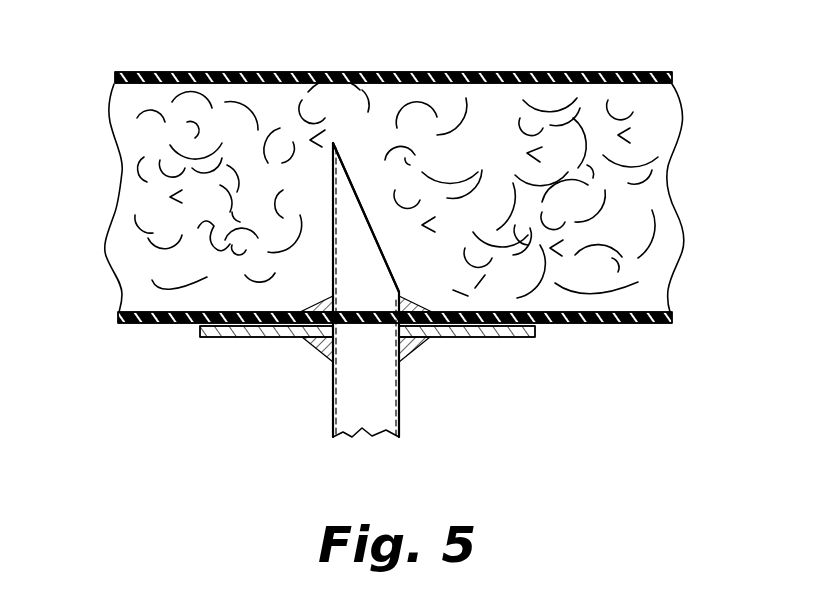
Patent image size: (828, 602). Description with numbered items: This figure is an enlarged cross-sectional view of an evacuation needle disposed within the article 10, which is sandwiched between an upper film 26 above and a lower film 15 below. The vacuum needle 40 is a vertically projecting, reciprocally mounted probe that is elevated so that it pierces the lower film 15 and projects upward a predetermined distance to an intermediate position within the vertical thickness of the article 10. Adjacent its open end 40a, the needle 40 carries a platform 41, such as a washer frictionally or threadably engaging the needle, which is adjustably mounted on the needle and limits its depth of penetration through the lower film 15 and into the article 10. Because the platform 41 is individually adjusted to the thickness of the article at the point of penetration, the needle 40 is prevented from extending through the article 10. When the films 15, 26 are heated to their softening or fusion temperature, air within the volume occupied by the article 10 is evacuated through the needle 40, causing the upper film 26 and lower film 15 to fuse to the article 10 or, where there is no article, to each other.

The article 10 is at (130, 132).
The upper film 26 is at (180, 72).
The lower film 15 is at (160, 325).
The platform 41 is at (240, 338).
The vacuum needle 40 is at (369, 318).
The open end 40a is at (360, 253).